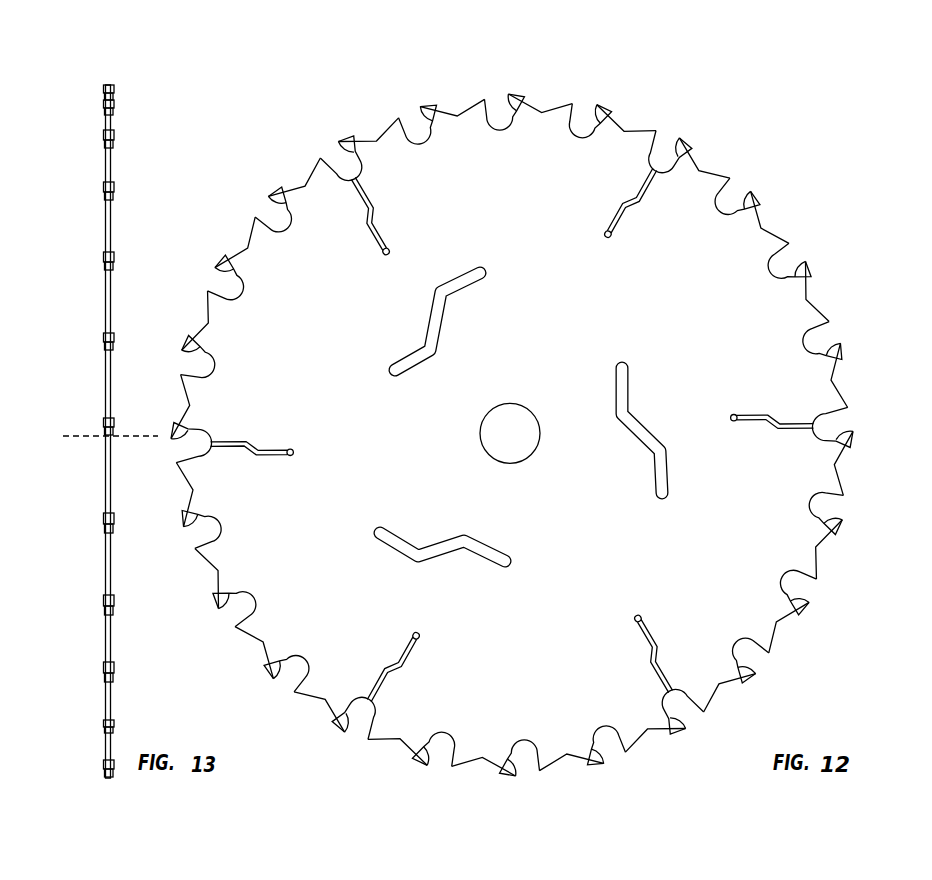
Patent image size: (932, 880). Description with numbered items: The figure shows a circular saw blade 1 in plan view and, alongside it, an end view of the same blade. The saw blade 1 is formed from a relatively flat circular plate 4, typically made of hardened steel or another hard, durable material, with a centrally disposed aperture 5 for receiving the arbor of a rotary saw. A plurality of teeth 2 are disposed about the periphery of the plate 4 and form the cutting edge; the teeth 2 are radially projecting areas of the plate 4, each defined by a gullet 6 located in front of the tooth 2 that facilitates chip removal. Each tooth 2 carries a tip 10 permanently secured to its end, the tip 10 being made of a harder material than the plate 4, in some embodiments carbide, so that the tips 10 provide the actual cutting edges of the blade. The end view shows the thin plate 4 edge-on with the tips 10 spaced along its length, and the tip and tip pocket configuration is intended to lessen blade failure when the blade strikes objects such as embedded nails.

In FIG. 12, the saw blade 1 is at (878, 158).
In FIG. 13, the saw blade 1 is at (170, 89).
In FIG. 12, the teeth 2 is at (390, 138).
In FIG. 12, the circular plate 4 is at (720, 263).
In FIG. 13, the circular plate 4 is at (105, 381).
In FIG. 12, the centrally disposed aperture 5 is at (539, 433).
In FIG. 12, the gullet 6 is at (342, 151).
In FIG. 12, the tip 10 is at (353, 140).
In FIG. 13, the tip 10 is at (113, 138).